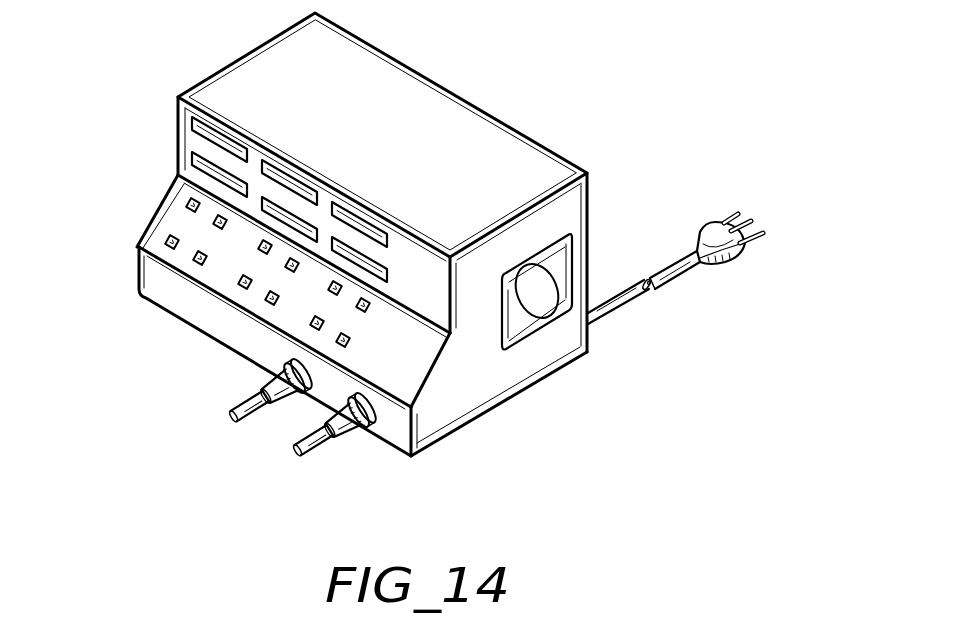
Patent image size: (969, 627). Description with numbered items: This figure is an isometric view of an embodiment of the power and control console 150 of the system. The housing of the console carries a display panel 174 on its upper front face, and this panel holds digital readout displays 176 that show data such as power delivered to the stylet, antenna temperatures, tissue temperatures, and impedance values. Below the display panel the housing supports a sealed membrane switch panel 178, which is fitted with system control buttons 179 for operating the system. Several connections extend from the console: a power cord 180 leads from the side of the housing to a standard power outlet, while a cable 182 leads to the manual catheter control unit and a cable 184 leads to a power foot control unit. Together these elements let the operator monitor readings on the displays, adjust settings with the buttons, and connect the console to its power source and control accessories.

The power and control console 150 is at (460, 95).
The display panel 174 is at (428, 270).
The digital readout displays 176 is at (200, 160).
The sealed membrane switch panel 178 is at (410, 352).
The system control buttons 179 is at (200, 265).
The power cord 180 is at (720, 263).
The cable 182 is at (343, 447).
The cable 184 is at (273, 412).